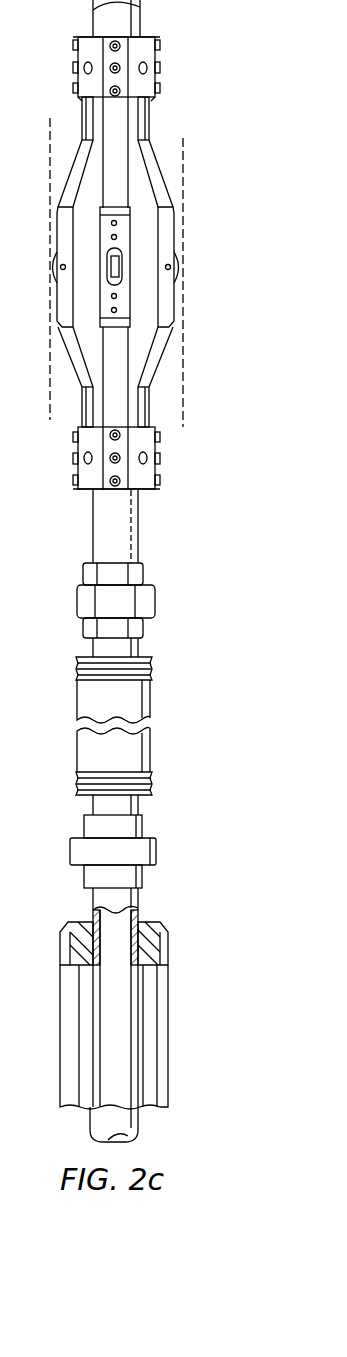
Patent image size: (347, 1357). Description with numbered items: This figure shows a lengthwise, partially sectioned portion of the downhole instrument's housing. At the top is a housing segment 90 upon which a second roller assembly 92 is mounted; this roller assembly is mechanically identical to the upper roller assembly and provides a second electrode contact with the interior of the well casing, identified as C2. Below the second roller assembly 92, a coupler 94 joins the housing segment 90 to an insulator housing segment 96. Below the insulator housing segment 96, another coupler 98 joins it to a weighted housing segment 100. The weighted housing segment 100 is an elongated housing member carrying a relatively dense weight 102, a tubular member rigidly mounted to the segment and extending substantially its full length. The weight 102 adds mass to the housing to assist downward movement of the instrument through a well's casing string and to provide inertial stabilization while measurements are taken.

The housing segment 90 is at (118, 15).
The second roller assembly 92 is at (141, 263).
The second electrode contact C2 is at (190, 269).
The coupler 94 is at (163, 594).
The insulator housing segment 96 is at (132, 752).
The coupler 98 is at (162, 845).
The weighted housing segment 100 is at (93, 903).
The weight 102 is at (155, 993).